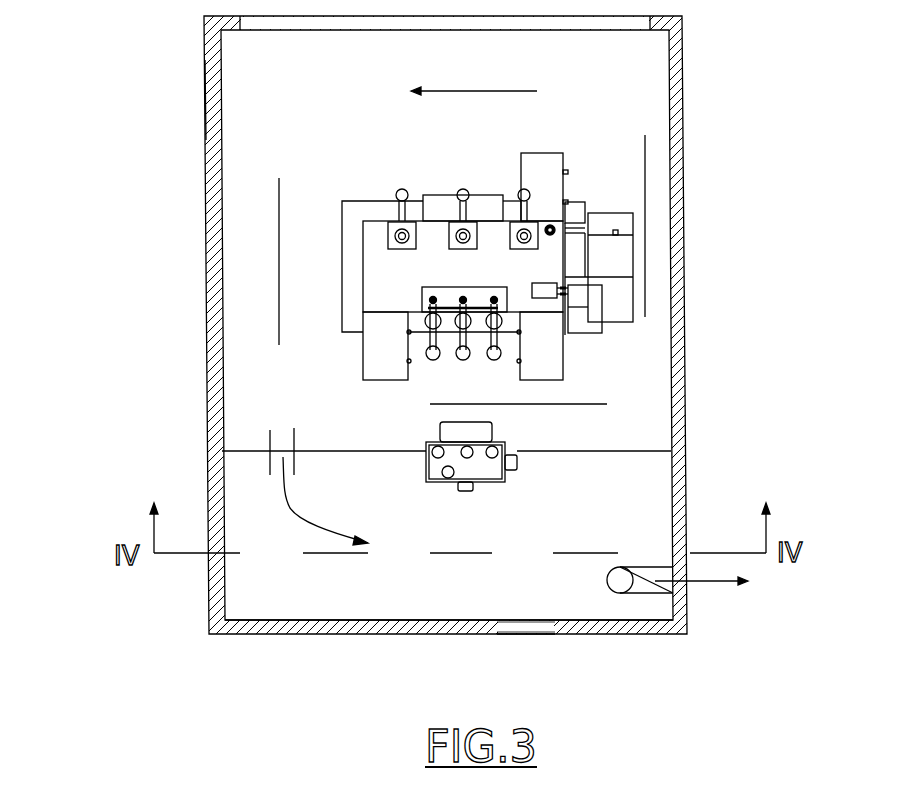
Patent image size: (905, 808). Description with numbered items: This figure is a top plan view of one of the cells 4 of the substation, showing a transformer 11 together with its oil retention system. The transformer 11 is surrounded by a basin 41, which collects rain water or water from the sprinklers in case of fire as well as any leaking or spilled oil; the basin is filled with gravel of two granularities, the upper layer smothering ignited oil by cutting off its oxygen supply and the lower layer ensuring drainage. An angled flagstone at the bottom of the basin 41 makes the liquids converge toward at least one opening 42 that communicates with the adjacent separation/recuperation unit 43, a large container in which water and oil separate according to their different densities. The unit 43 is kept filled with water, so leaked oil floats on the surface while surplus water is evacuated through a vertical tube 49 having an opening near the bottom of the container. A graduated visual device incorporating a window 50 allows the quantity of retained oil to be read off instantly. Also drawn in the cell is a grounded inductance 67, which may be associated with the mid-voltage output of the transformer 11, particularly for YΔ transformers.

The cell 4 is at (683, 239).
The basin 41 is at (243, 113).
The opening 42 is at (281, 433).
The separation/recuperation unit 43 is at (338, 602).
The vertical tube 49 is at (643, 590).
The window 50 is at (517, 630).
The grounded inductance 67 is at (462, 468).
The transformer 11 is at (383, 272).